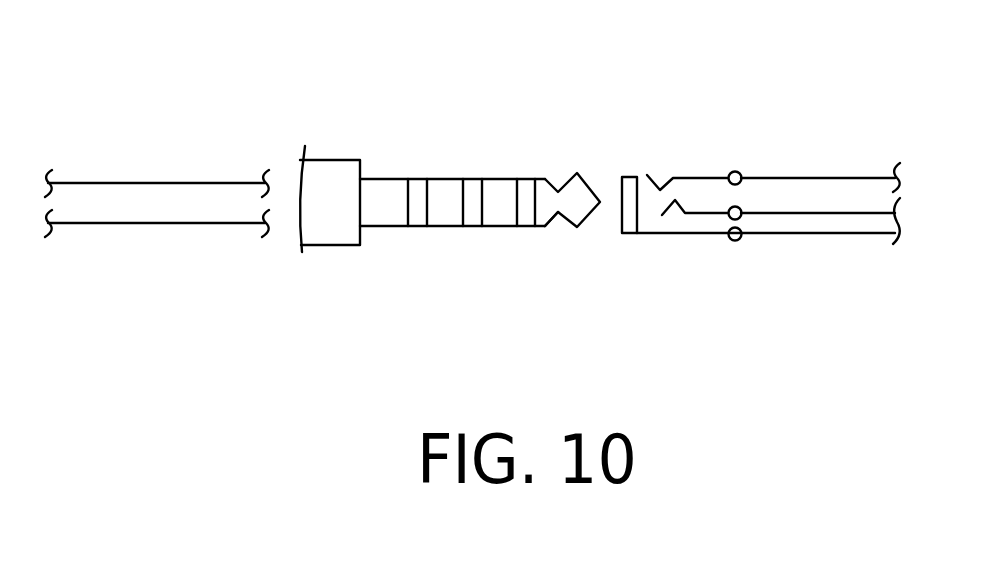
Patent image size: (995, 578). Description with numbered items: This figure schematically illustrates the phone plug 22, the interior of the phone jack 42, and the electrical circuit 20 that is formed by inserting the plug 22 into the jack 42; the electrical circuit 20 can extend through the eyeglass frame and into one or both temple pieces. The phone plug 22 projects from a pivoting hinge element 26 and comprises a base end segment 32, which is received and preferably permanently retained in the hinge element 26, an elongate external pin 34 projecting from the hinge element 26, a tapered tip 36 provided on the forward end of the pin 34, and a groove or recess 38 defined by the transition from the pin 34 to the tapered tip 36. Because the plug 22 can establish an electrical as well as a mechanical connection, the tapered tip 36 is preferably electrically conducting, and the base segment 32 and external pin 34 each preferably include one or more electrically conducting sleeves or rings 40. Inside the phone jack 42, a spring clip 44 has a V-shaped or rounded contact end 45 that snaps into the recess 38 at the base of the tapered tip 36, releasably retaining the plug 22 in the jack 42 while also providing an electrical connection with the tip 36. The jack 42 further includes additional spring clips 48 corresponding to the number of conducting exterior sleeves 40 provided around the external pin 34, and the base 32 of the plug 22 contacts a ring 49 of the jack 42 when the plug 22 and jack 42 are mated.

The electrical circuit 20 is at (98, 183).
The phone plug 22 is at (470, 182).
The pivoting hinge element 26 is at (331, 222).
The base end segment 32 is at (367, 178).
The elongate external pin 34 is at (494, 180).
The tapered tip 36 is at (580, 172).
The groove or recess 38 is at (558, 226).
The electrically conducting sleeves or rings 40 is at (469, 178).
The phone jack 42 is at (741, 179).
The spring clip 44 is at (712, 215).
The contact end 45 is at (675, 203).
The additional spring clips 48 is at (703, 177).
The ring 49 is at (632, 177).